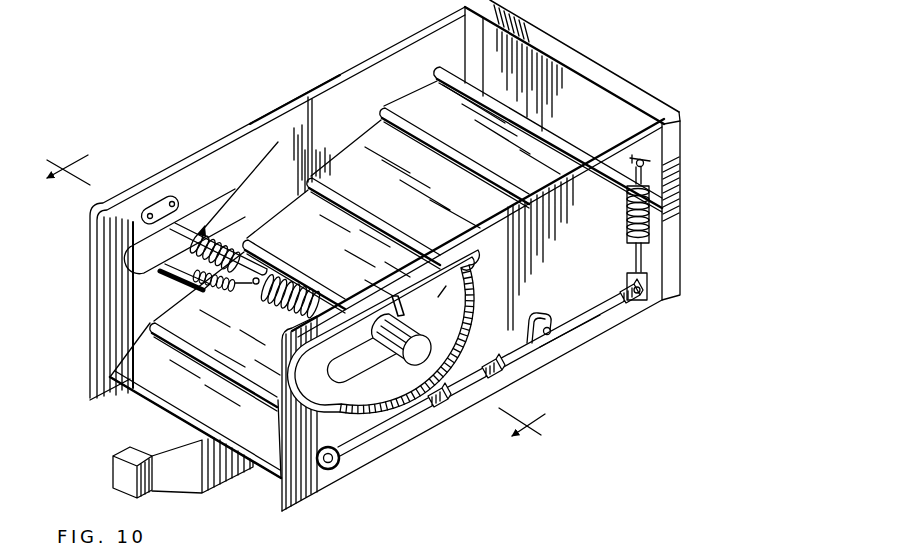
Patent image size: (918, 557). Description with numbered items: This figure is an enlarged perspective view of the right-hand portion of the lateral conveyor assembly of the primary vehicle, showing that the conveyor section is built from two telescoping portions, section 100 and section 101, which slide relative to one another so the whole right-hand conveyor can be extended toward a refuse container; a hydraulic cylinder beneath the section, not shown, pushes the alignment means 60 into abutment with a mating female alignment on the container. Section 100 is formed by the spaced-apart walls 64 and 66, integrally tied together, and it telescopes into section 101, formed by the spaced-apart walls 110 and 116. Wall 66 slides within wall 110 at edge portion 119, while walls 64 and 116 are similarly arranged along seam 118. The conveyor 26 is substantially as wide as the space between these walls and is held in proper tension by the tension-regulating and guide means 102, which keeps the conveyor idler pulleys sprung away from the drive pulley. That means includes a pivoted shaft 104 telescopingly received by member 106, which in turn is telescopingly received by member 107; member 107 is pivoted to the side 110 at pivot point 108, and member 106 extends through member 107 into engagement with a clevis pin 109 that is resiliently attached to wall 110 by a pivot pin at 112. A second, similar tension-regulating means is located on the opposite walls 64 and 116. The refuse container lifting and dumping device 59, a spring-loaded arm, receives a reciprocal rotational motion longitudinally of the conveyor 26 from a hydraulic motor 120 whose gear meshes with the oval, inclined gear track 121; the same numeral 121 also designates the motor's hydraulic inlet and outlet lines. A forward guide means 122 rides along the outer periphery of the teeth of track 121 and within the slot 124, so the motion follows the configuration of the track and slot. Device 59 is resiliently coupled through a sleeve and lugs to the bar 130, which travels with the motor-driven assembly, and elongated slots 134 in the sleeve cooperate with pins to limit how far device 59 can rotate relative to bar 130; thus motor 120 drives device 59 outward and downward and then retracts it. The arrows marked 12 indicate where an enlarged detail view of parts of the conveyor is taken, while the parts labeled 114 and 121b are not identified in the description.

The section line 12- 12 is at (308, 289).
The conveyor 26 is at (386, 272).
The refuse container lifting and dumping device 59 is at (185, 295).
The alignment means 60 is at (127, 479).
The wall 64 is at (191, 160).
The wall 66 is at (350, 281).
The telescoping section 100 is at (198, 140).
The telescoping section 101 is at (330, 78).
The tension-regulating and guide means 102 is at (596, 328).
The pivoted shaft 104 is at (338, 469).
The member 106 is at (624, 302).
The member 107 is at (565, 345).
The pivot point 108 is at (548, 322).
The clevis pin 109 is at (650, 282).
The wall 110 is at (588, 160).
The pivot pin 112 is at (647, 160).
The end wall 114 is at (682, 214).
The wall 116 is at (386, 51).
The seam 118 is at (311, 126).
The edge portion 119 is at (517, 212).
The hydraulic motor 120 is at (397, 312).
The gear track 121 is at (455, 350).
The pin 121b is at (432, 325).
The forward guide means 122 is at (341, 377).
The slot 124 is at (246, 182).
The bar 130 is at (228, 214).
The elongated slots 134 is at (244, 287).